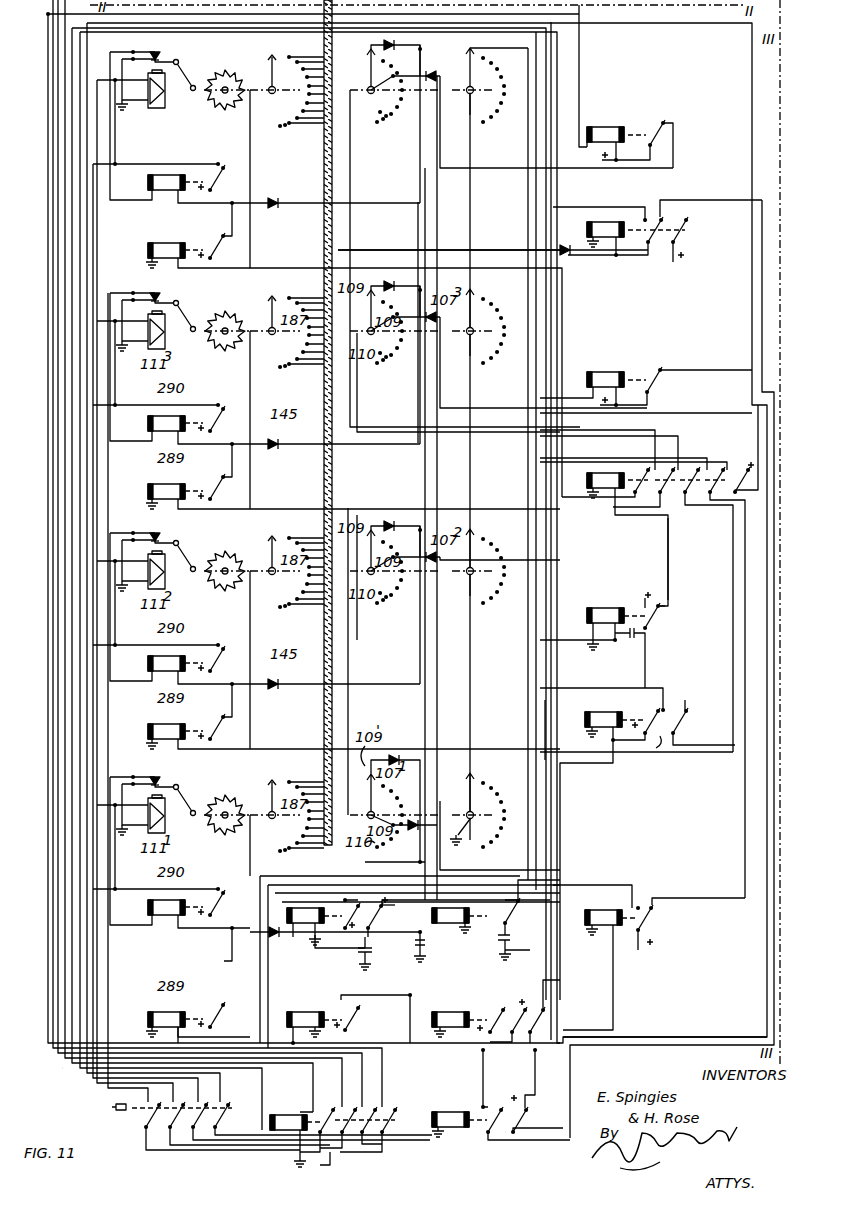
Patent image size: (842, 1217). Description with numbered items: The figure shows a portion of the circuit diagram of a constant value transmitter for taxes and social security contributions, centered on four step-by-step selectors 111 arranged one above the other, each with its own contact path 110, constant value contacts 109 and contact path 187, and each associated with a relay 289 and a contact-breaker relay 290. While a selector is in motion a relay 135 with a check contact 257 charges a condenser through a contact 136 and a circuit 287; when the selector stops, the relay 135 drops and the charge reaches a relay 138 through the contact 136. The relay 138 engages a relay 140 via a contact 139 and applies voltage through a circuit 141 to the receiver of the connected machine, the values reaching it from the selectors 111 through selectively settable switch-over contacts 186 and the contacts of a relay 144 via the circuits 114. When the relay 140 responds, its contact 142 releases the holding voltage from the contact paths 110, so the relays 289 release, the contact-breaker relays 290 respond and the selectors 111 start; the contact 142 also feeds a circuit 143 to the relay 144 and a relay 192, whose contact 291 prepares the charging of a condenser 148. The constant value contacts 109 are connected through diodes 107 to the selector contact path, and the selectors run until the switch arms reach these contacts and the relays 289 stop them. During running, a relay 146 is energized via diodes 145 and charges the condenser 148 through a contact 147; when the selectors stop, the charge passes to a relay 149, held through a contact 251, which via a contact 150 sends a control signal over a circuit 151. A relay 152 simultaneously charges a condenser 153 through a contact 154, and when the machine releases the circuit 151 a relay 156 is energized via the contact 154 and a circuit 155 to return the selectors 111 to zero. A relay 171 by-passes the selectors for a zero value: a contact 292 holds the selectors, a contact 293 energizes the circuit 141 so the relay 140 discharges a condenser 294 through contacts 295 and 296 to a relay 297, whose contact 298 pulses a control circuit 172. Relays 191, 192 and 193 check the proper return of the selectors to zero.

The step-by-step selector 111 is at (155, 108).
The contact-breaker relay 290 is at (167, 174).
The relay 289 is at (167, 242).
The contact path 187 is at (287, 90).
The constant value contact 109 is at (352, 54).
The contact path 110 is at (380, 114).
The diode 107 is at (428, 74).
The diode 145 is at (276, 200).
The relay 191 is at (606, 126).
The relay 192 is at (604, 216).
The contact 291 is at (690, 234).
The circuit 143 is at (498, 252).
The relay 193 is at (604, 368).
The relay 156 is at (604, 470).
The circuit 155 is at (668, 556).
The relay 152 is at (600, 608).
The contact 154 is at (664, 612).
The condenser 153 is at (660, 634).
The circuit 151 is at (648, 658).
The relay 149 is at (600, 712).
The contact 251 is at (688, 710).
The contact 150 is at (656, 748).
The control circuit 172 is at (568, 806).
The circuit 141 is at (540, 726).
The relay 140 is at (306, 906).
The contact 142 is at (346, 902).
The contact 295 is at (396, 910).
The condenser 294 is at (360, 960).
The relay 146 is at (452, 930).
The contact 147 is at (518, 924).
The condenser 148 is at (518, 947).
The relay 138 is at (306, 1012).
The contact 139 is at (364, 1010).
The relay 171 is at (438, 1010).
The contact 292 is at (502, 1004).
The contact 293 is at (512, 998).
The contact 296 is at (532, 1012).
The relay 297 is at (602, 928).
The contact 298 is at (674, 912).
The circuit 287 is at (642, 1036).
The relay 135 is at (452, 1108).
The contact 136 is at (516, 1090).
The check contact 257 is at (505, 1132).
The relay 144 is at (290, 1112).
The switch-over contact 186 is at (164, 1130).
The circuit 114 is at (84, 1066).